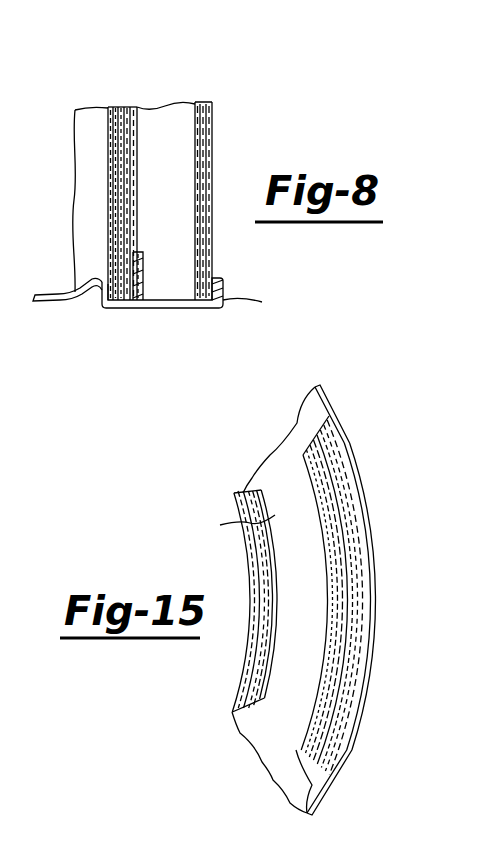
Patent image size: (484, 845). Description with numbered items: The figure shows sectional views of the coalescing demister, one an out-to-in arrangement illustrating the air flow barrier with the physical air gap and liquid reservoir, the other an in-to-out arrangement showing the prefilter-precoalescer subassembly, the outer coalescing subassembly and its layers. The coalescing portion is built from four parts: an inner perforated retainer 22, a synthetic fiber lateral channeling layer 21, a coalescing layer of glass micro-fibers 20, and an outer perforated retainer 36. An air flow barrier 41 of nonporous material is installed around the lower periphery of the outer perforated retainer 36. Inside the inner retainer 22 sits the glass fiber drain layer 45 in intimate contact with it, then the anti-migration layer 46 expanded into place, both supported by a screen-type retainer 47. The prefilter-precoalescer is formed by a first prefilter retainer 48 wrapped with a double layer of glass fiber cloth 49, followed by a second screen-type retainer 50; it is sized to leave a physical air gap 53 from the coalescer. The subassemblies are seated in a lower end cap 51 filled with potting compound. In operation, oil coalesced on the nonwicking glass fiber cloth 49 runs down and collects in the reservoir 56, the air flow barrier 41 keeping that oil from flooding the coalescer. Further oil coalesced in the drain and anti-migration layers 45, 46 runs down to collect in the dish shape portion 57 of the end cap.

In FIG. 8, the coalescing layer of glass micro-fibers 20 is at (125, 107).
In FIG. 15, the coalescing layer of glass micro-fibers 20 is at (335, 440).
In FIG. 8, the synthetic fiber lateral channeling layer 21 is at (123, 300).
In FIG. 15, the synthetic fiber lateral channeling layer 21 is at (310, 442).
In FIG. 8, the inner perforated retainer 22 is at (113, 107).
In FIG. 15, the inner perforated retainer 22 is at (305, 448).
In FIG. 8, the outer perforated retainer 36 is at (132, 300).
In FIG. 15, the outer perforated retainer 36 is at (310, 812).
In FIG. 8, the air flow barrier 41 is at (143, 290).
In FIG. 15, the air flow barrier 41 is at (305, 730).
In FIG. 15, the glass fiber drain layer 45 is at (347, 480).
In FIG. 15, the anti-migration layer 46 is at (352, 513).
In FIG. 15, the screen-type retainer 47 is at (360, 570).
In FIG. 8, the first prefilter retainer 48 is at (196, 132).
In FIG. 8, the glass fiber cloth 49 is at (205, 102).
In FIG. 15, the glass fiber cloth 49 is at (245, 487).
In FIG. 8, the surface 50 is at (212, 160).
In FIG. 8, the lower end cap 51 is at (223, 299).
In FIG. 15, the lower end cap 51 is at (262, 765).
In FIG. 8, the physical air gap 53 is at (152, 110).
In FIG. 15, the physical air gap 53 is at (247, 518).
In FIG. 8, the reservoir 56 is at (187, 287).
In FIG. 8, the dish shape portion 57 is at (50, 292).